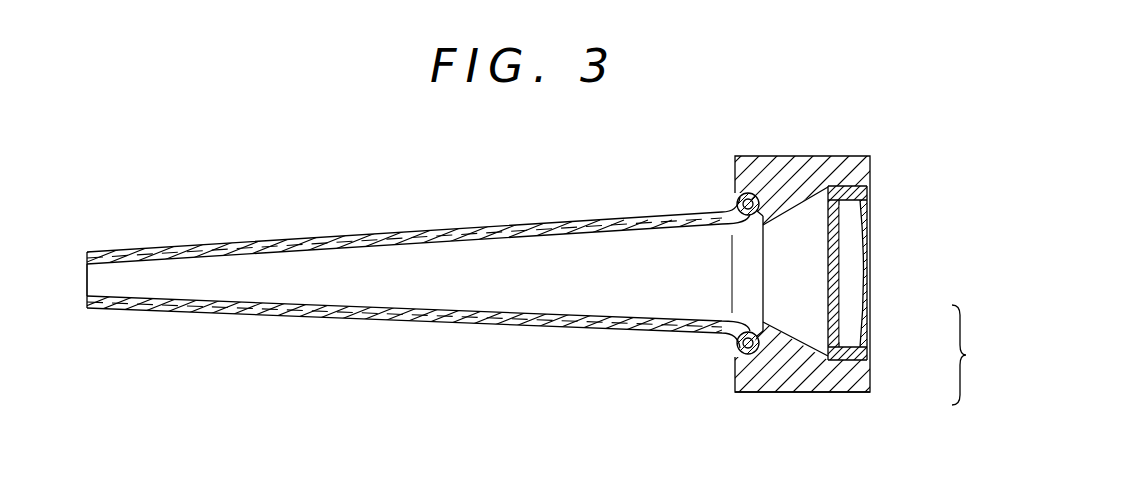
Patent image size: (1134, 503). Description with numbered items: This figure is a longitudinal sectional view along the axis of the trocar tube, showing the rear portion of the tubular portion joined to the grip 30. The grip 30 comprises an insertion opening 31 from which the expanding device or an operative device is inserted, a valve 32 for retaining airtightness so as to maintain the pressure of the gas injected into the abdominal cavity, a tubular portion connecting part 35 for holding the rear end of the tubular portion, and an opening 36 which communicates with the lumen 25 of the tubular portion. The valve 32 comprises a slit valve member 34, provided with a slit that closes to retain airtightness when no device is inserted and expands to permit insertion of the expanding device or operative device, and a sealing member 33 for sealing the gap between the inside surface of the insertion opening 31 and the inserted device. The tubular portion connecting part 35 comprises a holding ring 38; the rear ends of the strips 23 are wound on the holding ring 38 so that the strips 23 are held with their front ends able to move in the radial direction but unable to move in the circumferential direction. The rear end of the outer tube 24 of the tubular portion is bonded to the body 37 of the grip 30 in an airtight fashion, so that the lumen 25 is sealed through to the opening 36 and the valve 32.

The strips 23 is at (607, 224).
The outer tube 24 is at (517, 318).
The lumen 25 is at (383, 278).
The grip 30 is at (836, 155).
The insertion opening 31 is at (858, 258).
The valve 32 is at (979, 355).
The sealing member 33 is at (872, 320).
The slit valve member 34 is at (838, 332).
The tubular portion connecting part 35 is at (747, 196).
The opening 36 is at (783, 302).
The body 37 is at (753, 392).
The holding ring 38 is at (741, 353).